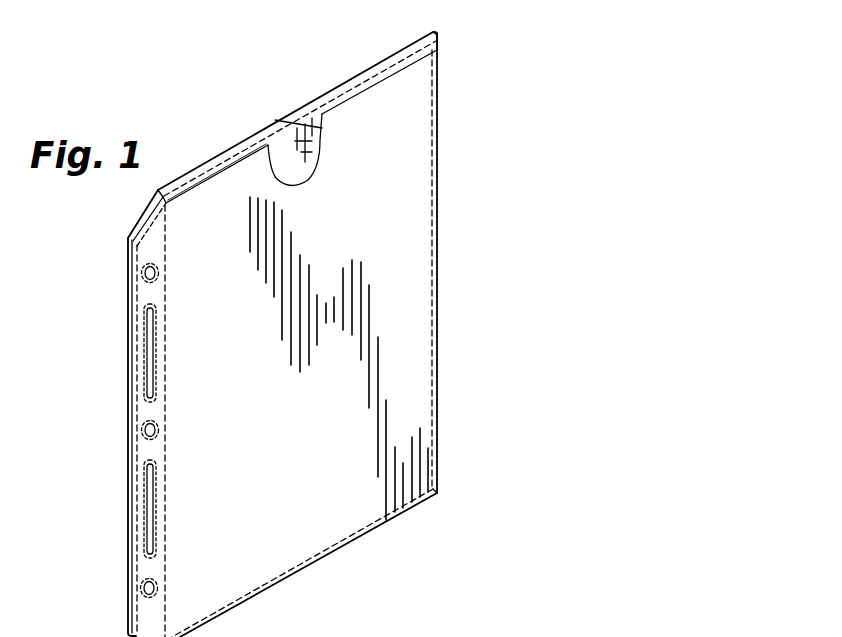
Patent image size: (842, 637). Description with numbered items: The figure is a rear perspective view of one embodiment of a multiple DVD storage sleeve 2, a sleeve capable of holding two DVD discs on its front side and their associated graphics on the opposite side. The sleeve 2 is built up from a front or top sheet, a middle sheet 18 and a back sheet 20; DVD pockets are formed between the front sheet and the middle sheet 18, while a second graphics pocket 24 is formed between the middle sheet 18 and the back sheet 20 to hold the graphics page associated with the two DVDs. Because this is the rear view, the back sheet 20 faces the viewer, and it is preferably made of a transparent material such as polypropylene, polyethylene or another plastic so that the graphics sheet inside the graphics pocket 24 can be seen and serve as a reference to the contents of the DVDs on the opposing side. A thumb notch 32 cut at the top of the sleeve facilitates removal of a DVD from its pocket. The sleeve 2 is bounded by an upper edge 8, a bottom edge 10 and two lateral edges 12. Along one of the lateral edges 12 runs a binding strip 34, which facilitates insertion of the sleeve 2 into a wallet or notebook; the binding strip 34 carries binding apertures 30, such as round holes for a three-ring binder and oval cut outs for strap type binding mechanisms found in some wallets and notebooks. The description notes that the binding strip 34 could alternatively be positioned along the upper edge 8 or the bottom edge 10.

The DVD storage sleeve 2 is at (492, 233).
The upper edge 8 is at (330, 87).
The bottom edge 10 is at (377, 525).
The lateral edges 12 is at (437, 177).
The middle sheet 18 is at (437, 43).
The back sheet 20 is at (432, 320).
The graphics pocket 24 is at (220, 172).
The binding apertures 30 is at (140, 430).
The thumb notch 32 is at (290, 128).
The binding strip 34 is at (140, 563).